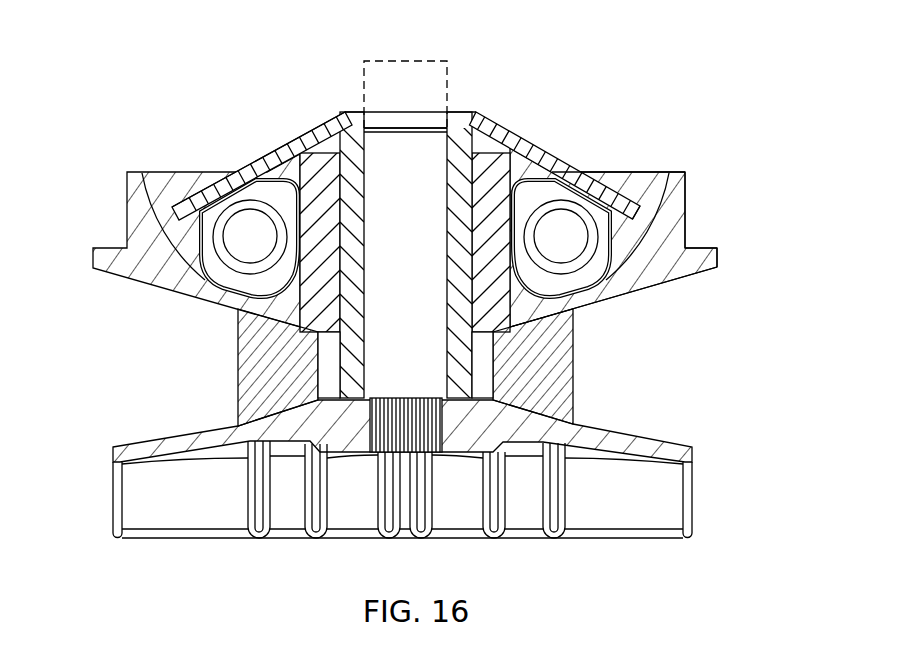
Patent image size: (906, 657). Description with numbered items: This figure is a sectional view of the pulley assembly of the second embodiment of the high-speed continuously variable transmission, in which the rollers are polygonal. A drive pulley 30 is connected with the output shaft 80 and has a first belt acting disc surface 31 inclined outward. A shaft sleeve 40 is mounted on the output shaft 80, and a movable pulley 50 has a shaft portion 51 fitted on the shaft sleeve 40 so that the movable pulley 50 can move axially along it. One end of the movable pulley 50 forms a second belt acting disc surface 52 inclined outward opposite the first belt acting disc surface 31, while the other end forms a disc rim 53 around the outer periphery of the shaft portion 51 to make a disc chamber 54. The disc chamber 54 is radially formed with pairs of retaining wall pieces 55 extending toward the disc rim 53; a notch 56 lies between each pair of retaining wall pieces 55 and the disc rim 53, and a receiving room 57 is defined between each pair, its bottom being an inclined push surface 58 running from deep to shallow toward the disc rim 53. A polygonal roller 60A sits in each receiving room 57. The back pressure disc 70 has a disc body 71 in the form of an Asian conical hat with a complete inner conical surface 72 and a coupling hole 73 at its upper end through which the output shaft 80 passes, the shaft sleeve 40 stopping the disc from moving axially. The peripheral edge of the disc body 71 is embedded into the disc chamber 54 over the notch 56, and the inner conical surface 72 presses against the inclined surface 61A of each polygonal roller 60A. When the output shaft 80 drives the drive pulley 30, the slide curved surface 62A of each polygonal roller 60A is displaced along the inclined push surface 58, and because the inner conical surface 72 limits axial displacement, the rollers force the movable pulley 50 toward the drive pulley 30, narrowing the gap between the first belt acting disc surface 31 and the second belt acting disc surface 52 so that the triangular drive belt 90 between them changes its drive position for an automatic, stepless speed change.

The drive pulley 30 is at (190, 447).
The first belt acting disc surface 31 is at (605, 422).
The shaft sleeve 40 is at (490, 118).
The movable pulley 50 is at (100, 260).
The shaft portion 51 is at (307, 170).
The second belt acting disc surface 52 is at (593, 302).
The disc rim 53 is at (678, 182).
The disc chamber 54 is at (623, 178).
The retaining wall pieces 55 is at (627, 233).
The notch 56 is at (637, 197).
The receiving room 57 is at (617, 247).
The inclined push surface 58 is at (613, 270).
The polygonal roller 60A is at (212, 275).
The inclined surface 61A is at (222, 180).
The slide curved surface 62A is at (215, 300).
The back pressure disc 70 is at (458, 128).
The disc body 71 is at (226, 189).
The inner conical surface 72 is at (222, 256).
The coupling hole 73 is at (370, 124).
The output shaft 80 is at (413, 78).
The triangular drive belt 90 is at (247, 363).